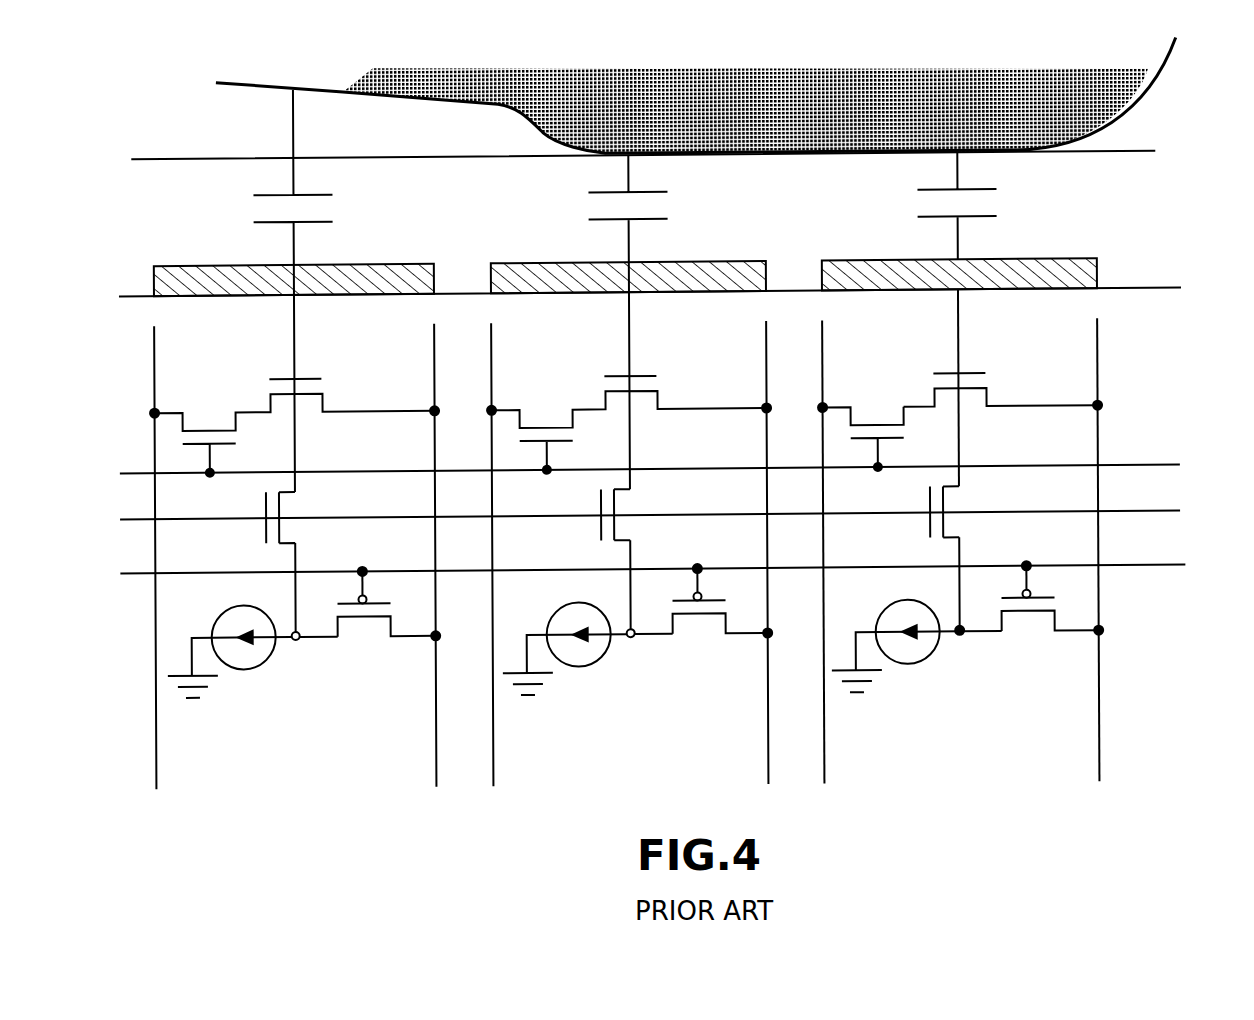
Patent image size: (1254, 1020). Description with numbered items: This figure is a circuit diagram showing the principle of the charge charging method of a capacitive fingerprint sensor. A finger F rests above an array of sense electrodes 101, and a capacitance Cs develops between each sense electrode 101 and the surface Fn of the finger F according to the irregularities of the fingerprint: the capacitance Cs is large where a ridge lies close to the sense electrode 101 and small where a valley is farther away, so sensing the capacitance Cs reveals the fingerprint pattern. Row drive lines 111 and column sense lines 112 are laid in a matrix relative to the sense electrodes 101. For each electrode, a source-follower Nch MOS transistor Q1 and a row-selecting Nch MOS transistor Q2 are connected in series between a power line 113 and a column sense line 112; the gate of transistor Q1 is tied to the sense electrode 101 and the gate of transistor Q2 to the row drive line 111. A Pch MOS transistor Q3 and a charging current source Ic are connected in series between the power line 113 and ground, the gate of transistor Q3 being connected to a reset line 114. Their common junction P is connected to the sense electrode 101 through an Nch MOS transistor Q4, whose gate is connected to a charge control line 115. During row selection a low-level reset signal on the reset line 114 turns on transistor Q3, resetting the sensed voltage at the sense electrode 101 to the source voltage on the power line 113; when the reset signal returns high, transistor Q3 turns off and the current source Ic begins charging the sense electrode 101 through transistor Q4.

The sense electrode 101 is at (1077, 270).
The row drive line 111 is at (1130, 472).
The column sense line 112 is at (823, 731).
The power line 113 is at (1098, 722).
The reset line 114 is at (1130, 572).
The charge control line 115 is at (1130, 518).
The finger F is at (1145, 82).
The surface of the finger Fn is at (1142, 117).
The common junction P is at (960, 641).
The capacitance Cs is at (939, 206).
The source-follower Nch MOS transistor Q1 is at (1000, 388).
The Nch MOS transistor Q2 is at (862, 430).
The Pch MOS transistor Q3 is at (1052, 605).
The Nch MOS transistor Q4 is at (961, 511).
The charging current source Ic is at (895, 642).